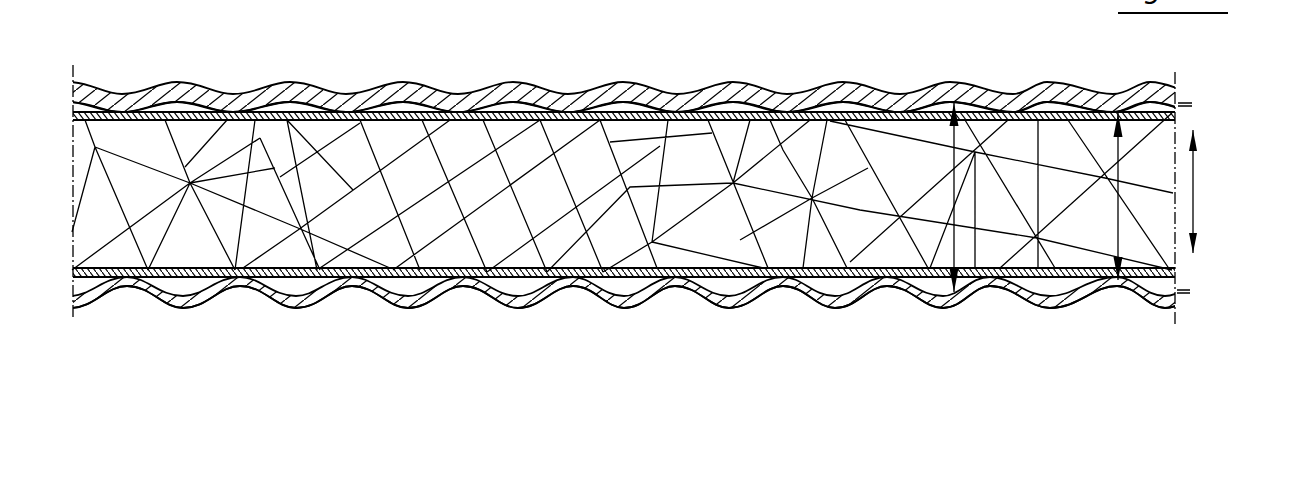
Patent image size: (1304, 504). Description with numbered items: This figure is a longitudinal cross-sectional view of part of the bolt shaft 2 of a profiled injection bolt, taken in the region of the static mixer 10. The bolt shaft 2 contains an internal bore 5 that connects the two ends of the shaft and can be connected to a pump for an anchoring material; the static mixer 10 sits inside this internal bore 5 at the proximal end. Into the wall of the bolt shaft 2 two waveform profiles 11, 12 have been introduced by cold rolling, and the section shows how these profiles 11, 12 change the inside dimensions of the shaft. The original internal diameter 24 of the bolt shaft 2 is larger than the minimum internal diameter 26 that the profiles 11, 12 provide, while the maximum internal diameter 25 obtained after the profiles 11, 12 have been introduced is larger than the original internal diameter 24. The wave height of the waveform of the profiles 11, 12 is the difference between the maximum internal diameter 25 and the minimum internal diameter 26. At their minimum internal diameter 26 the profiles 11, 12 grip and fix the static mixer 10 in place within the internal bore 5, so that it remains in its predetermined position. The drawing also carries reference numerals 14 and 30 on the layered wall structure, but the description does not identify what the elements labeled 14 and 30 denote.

The bolt shaft 2 is at (103, 287).
The internal bore 5 is at (187, 110).
The static mixer 10 is at (782, 115).
The profile 11 is at (398, 86).
The profile 12 is at (177, 307).
The lower adhesive layer 14 is at (1173, 117).
The original internal diameter 24 is at (1170, 193).
The maximum internal diameter 25 is at (956, 127).
The minimum internal diameter 26 is at (1082, 113).
The upper adhesive layer 30 is at (722, 113).